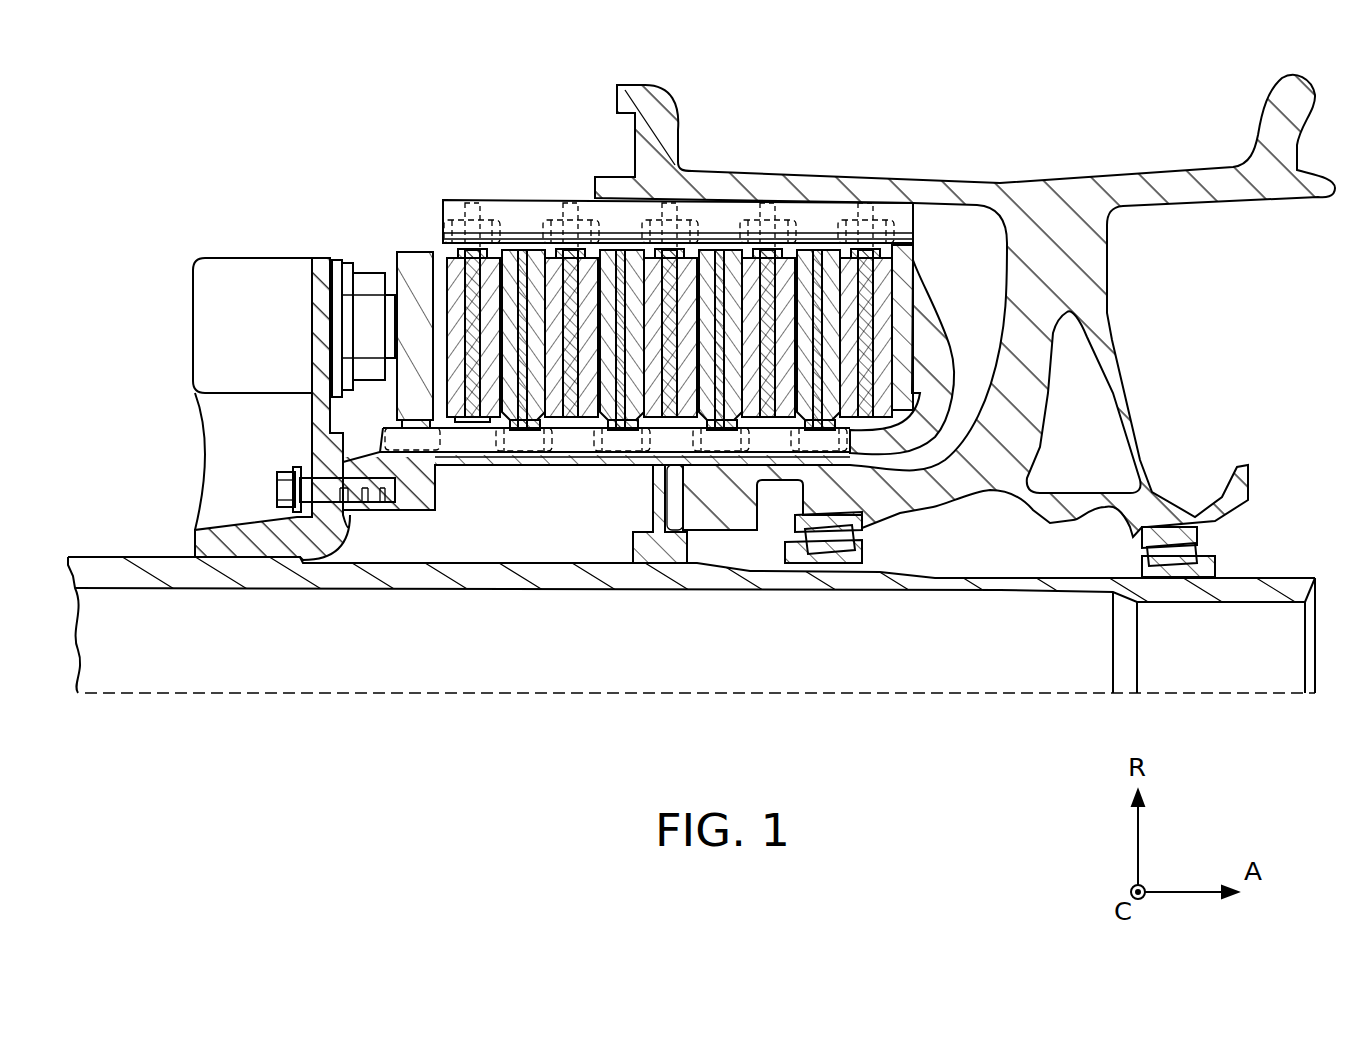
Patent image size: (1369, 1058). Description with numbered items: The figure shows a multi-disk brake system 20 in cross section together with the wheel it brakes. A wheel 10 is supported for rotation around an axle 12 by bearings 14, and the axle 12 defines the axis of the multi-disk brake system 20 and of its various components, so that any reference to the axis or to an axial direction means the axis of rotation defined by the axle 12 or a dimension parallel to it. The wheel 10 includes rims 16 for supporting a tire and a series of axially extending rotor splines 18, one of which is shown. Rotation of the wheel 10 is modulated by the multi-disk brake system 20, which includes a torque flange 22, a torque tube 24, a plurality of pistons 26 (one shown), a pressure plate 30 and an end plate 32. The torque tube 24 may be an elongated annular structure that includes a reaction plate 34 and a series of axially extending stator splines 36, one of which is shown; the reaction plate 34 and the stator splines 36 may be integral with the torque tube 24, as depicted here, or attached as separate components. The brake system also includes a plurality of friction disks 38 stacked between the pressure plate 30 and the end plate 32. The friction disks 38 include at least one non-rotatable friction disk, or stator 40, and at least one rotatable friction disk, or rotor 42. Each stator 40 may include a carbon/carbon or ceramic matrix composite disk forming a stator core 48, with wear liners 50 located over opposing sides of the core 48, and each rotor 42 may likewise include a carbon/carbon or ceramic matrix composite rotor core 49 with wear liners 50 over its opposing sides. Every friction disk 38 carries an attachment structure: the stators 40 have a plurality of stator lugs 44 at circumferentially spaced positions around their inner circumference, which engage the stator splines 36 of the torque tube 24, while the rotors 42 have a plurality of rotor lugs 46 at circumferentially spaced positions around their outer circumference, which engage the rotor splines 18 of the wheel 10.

The wheel 10 is at (1120, 150).
The axle 12 is at (1012, 578).
The bearings 14 is at (847, 543).
The rims 16 is at (652, 105).
The rotor splines 18 is at (617, 203).
The multi-disk brake system 20 is at (300, 128).
The torque flange 22 is at (317, 450).
The torque tube 24 is at (517, 468).
The pistons 26 is at (370, 283).
The pressure plate 30 is at (398, 252).
The end plate 32 is at (910, 248).
The reaction plate 34 is at (950, 386).
The stator splines 36 is at (586, 447).
The friction disks 38 is at (686, 330).
The non-rotatable friction disk (stator) 40 is at (531, 446).
The rotatable friction disk (rotor) 42 is at (471, 240).
The stator lugs 44 is at (787, 442).
The rotor lugs 46 is at (746, 218).
The stator core 48 is at (812, 303).
The rotor core 49 is at (865, 335).
The wear liners 50 is at (830, 257).